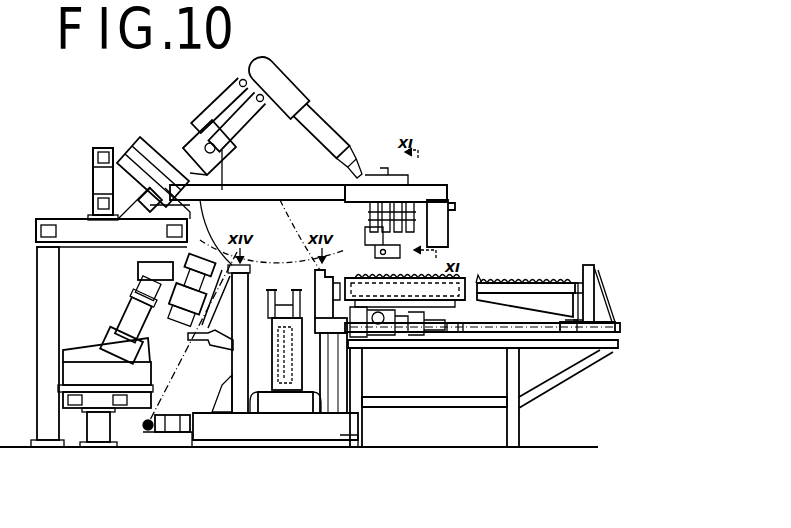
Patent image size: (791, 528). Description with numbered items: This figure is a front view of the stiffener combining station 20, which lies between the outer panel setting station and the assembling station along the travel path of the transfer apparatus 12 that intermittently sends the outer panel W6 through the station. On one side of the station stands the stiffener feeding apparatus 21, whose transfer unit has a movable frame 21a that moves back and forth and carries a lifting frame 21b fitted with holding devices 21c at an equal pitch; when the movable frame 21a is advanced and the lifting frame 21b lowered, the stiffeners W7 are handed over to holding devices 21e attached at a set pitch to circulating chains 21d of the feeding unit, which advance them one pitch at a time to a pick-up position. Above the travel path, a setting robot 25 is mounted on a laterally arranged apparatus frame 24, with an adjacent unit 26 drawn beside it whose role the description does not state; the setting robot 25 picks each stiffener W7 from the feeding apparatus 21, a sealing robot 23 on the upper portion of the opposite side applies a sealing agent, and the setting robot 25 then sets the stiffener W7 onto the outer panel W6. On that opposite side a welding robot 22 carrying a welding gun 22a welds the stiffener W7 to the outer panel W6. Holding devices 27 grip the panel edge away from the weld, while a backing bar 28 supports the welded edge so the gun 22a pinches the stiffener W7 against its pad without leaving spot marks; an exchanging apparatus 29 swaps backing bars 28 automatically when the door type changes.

The transfer apparatus 12 is at (285, 413).
The stiffener combining station 20 is at (300, 246).
The stiffener feeding apparatus 21 is at (606, 266).
The movable frame 21a is at (617, 328).
The lifting frame 21b is at (566, 285).
The holding devices 21c is at (490, 283).
The chains 21d is at (455, 302).
The holding devices 21e is at (462, 275).
The welding robot 22 is at (131, 279).
The welding gun 22a is at (244, 263).
The sealing robot 23 is at (293, 88).
The apparatus frame 24 is at (219, 190).
The setting robot 25 is at (412, 175).
The side unit 26 is at (447, 192).
The holding devices 27 is at (312, 268).
The backing bar 28 is at (175, 153).
The exchanging apparatus 29 is at (150, 447).
The outer panel W6 is at (279, 200).
The stiffener W7 is at (540, 278).